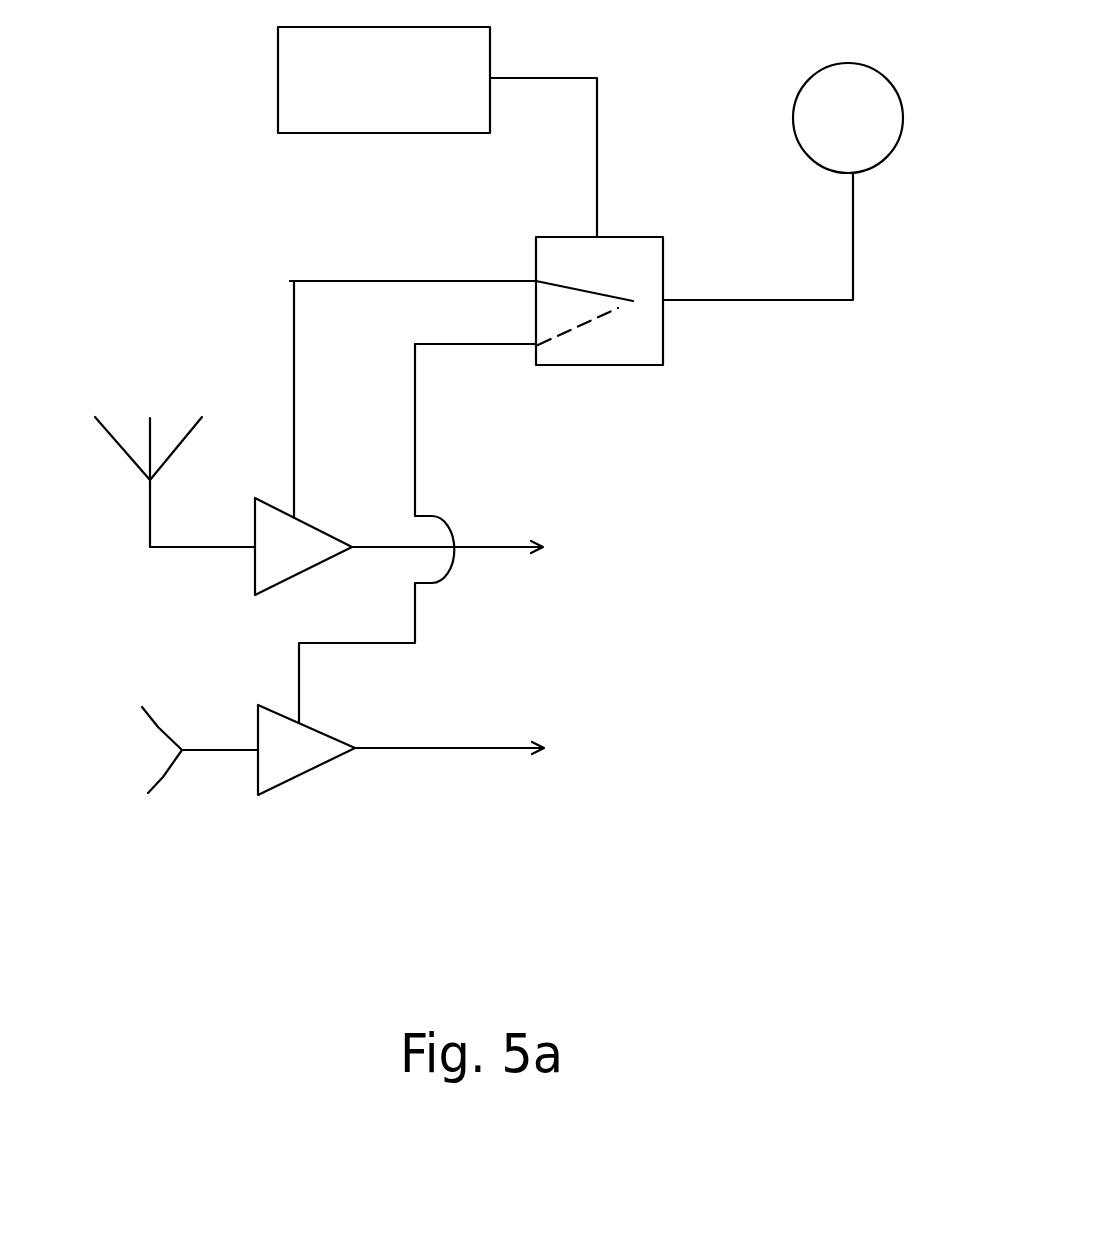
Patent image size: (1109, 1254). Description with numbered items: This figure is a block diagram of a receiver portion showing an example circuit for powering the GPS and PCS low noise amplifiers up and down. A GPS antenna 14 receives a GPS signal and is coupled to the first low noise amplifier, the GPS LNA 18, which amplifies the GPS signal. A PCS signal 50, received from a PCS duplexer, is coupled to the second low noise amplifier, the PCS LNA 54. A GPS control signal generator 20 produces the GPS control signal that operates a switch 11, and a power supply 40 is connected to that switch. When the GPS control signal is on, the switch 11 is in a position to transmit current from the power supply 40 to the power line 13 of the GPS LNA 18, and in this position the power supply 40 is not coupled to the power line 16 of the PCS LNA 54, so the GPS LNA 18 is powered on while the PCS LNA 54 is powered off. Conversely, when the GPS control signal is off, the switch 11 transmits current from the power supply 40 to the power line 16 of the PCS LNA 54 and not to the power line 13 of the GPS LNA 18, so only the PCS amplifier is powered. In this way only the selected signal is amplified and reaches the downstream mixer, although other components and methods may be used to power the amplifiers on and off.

The GPS control signal generator 20 is at (490, 45).
The power supply 40 is at (885, 160).
The switch 11 is at (620, 365).
The GPS antenna 14 is at (118, 447).
The power line 13 is at (294, 475).
The first low noise amplifier 18 is at (299, 582).
The power line 16 is at (299, 697).
The second low noise amplifier 54 is at (310, 772).
The PCS signal 50 is at (163, 777).